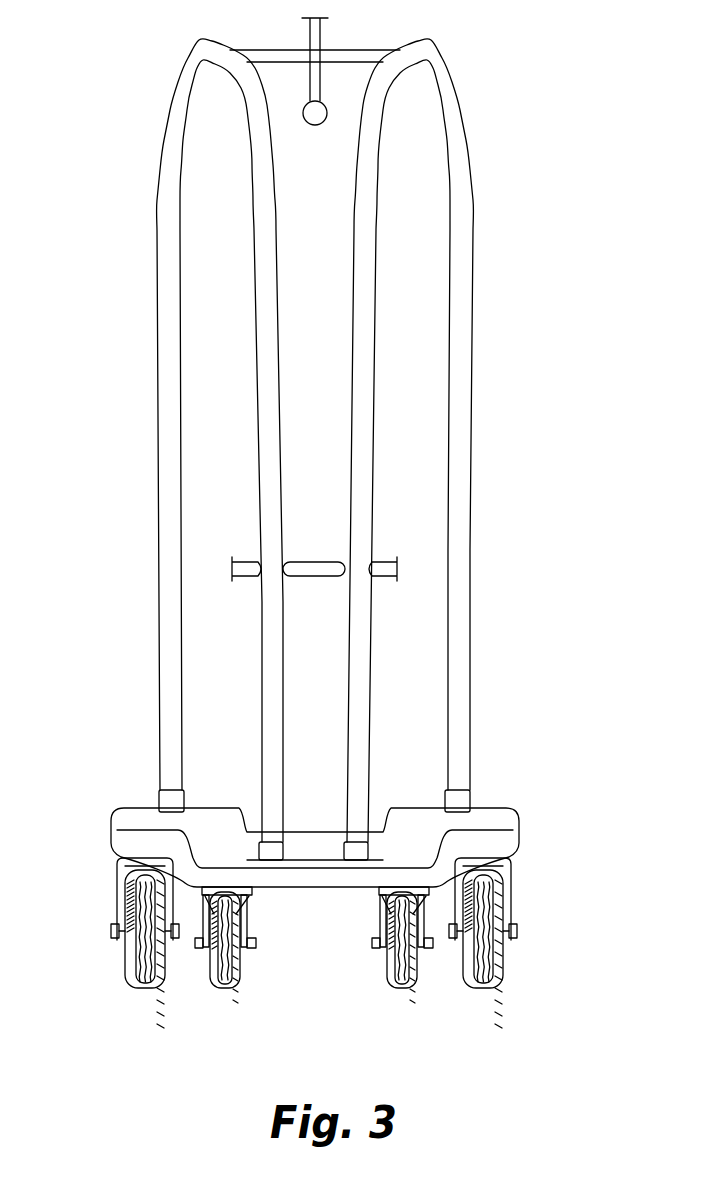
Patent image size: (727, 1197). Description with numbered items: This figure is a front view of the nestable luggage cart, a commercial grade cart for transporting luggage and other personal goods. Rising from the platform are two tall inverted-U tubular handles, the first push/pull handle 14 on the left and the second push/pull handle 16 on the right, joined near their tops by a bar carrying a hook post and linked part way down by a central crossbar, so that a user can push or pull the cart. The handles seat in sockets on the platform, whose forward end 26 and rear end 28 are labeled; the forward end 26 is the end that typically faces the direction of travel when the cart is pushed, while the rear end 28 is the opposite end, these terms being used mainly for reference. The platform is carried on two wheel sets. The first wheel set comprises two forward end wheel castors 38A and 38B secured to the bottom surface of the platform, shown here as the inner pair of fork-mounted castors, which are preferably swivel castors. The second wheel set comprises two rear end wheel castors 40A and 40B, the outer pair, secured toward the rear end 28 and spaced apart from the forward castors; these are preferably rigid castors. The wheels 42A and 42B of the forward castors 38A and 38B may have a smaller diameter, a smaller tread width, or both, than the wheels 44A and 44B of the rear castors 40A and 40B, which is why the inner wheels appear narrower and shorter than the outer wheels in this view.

The first push/pull handle 14 is at (170, 260).
The second push/pull handle 16 is at (472, 197).
The first end 26 is at (317, 880).
The second opposing end 28 is at (493, 807).
The forward end wheel castor 38A is at (205, 955).
The forward end wheel castor 38B is at (382, 958).
The rear end wheel castor 40A is at (127, 947).
The rear end wheel castor 40B is at (500, 962).
The wheel 42A is at (225, 988).
The wheel 42B is at (413, 988).
The wheel 44A is at (143, 987).
The wheel 44B is at (490, 988).